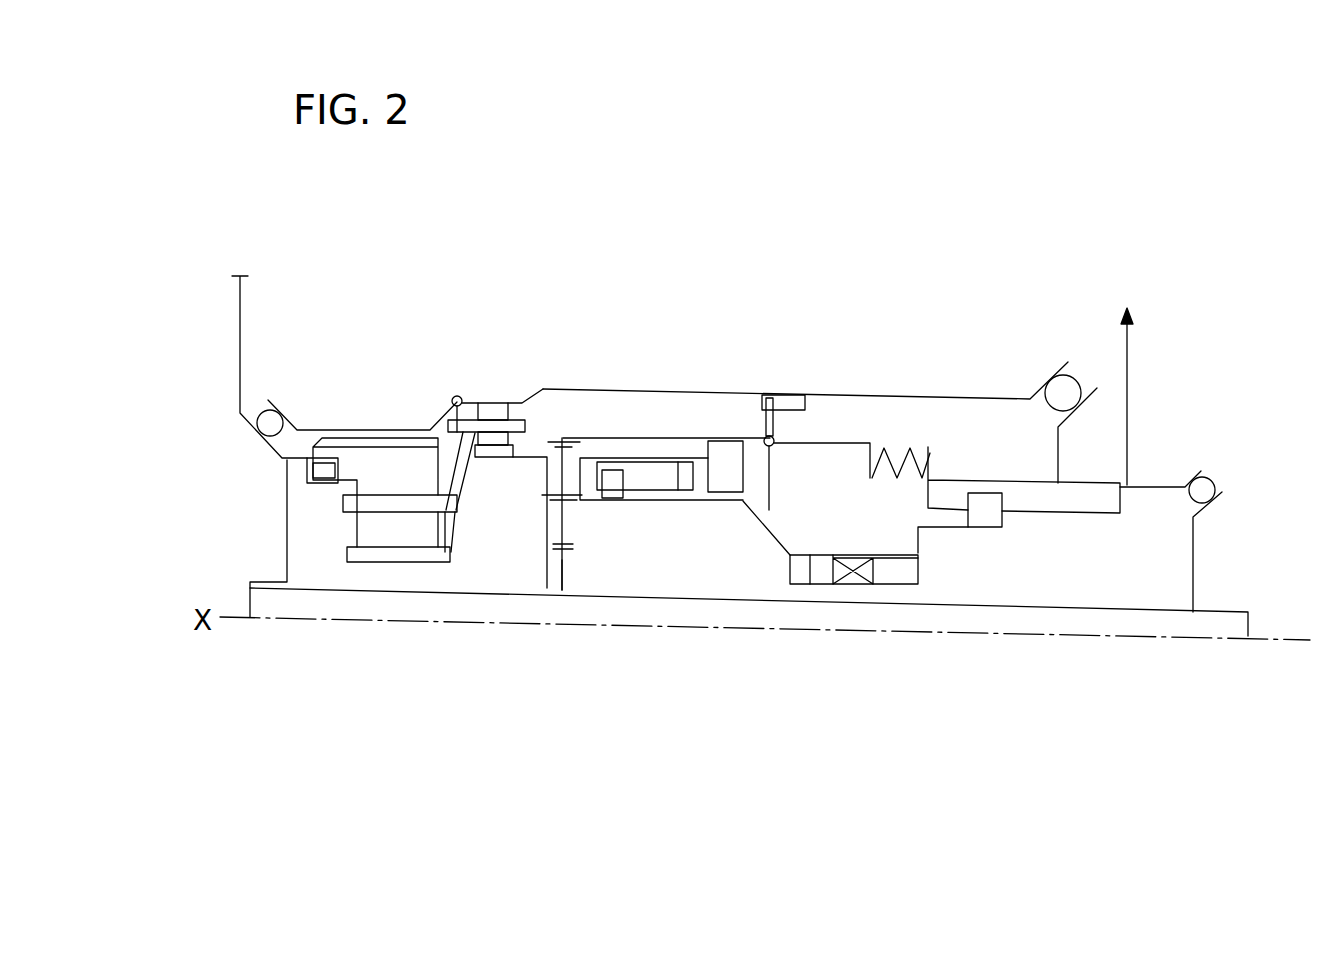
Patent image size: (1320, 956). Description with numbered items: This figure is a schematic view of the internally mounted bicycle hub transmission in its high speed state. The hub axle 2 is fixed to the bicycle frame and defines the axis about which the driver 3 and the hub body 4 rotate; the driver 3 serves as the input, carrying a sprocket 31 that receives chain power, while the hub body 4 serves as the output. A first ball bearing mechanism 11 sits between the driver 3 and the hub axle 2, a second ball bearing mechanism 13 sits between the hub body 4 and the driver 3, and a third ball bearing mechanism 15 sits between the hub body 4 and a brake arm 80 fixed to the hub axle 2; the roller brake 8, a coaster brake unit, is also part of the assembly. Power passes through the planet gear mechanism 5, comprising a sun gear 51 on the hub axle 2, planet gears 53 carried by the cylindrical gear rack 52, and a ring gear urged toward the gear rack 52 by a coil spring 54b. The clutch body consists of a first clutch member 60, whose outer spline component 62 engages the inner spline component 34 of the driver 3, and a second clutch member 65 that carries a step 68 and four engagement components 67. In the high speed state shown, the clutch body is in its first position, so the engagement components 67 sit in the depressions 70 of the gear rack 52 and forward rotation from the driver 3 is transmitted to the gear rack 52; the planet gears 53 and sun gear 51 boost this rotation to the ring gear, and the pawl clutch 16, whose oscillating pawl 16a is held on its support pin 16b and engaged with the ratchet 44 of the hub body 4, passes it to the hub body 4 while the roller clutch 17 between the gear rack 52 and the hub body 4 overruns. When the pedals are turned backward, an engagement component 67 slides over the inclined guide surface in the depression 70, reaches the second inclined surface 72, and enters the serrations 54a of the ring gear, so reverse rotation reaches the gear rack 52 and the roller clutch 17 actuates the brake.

The hub axle 2 is at (1215, 612).
The driver 3 is at (1153, 483).
The hub body 4 is at (946, 393).
The planet gear mechanism 5 is at (586, 542).
The roller brake 8 is at (377, 445).
The first ball bearing mechanism 11 is at (1223, 466).
The second ball bearing mechanism 13 is at (1083, 364).
The third ball bearing mechanism 15 is at (257, 392).
The pawl clutch 16 is at (788, 478).
The oscillating pawl 16a is at (764, 413).
The support pin 16b is at (775, 440).
The roller clutch 17 is at (493, 396).
The sprocket 31 is at (1138, 323).
The inner spline component 34 is at (1070, 512).
The ratchet 44 is at (797, 395).
The sun gear 51 is at (562, 570).
The gear rack 52 is at (457, 530).
The planet gears 53 is at (558, 517).
The serrations 54a is at (730, 480).
The coil spring 54b is at (896, 447).
The first clutch member 60 is at (948, 530).
The outer spline component 62 is at (990, 494).
The second clutch member 65 is at (660, 502).
The engagement components 67 is at (610, 478).
The step 68 is at (780, 540).
The depressions 70 is at (650, 472).
The second inclined surface 72 is at (688, 477).
The brake arm 80 is at (240, 358).